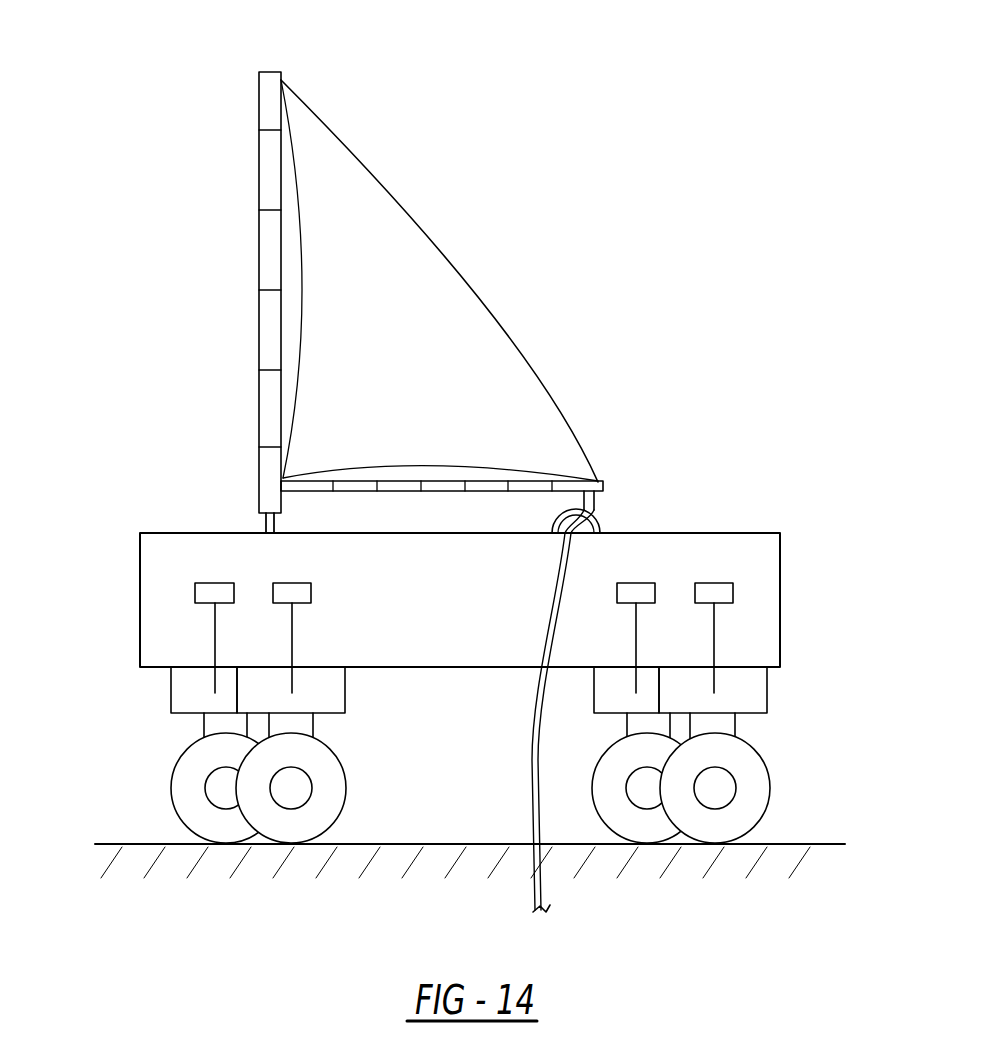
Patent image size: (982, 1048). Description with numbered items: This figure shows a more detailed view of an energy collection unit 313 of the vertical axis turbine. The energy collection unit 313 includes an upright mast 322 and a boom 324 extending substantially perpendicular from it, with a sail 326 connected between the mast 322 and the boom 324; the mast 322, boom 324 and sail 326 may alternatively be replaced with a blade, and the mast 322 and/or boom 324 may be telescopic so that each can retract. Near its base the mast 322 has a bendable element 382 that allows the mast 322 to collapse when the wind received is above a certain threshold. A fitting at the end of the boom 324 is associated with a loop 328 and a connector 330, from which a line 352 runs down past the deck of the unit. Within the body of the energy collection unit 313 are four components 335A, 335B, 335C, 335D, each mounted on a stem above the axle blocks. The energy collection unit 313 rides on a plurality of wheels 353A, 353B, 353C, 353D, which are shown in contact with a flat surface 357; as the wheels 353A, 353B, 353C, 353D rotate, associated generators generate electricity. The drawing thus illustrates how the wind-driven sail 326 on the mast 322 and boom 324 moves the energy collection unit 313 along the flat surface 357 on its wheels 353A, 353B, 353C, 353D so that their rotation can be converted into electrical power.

The energy collection unit 313 is at (605, 227).
The mast 322 is at (270, 78).
The boom 324 is at (604, 484).
The sail 326 is at (422, 243).
The sheet loop / block 328 is at (556, 516).
The boom fitting 330 is at (598, 520).
The sensor A 335A is at (725, 595).
The sensor B 335B is at (637, 590).
The sensor C 335C is at (307, 593).
The sensor D 335D is at (205, 592).
The control line / sheet 352 is at (532, 757).
The wheel 353A is at (753, 778).
The wheel 353B is at (633, 820).
The wheel 353C is at (345, 775).
The wheel 353D is at (190, 770).
The flat surface 357 is at (798, 843).
The bendable element 382 is at (267, 525).